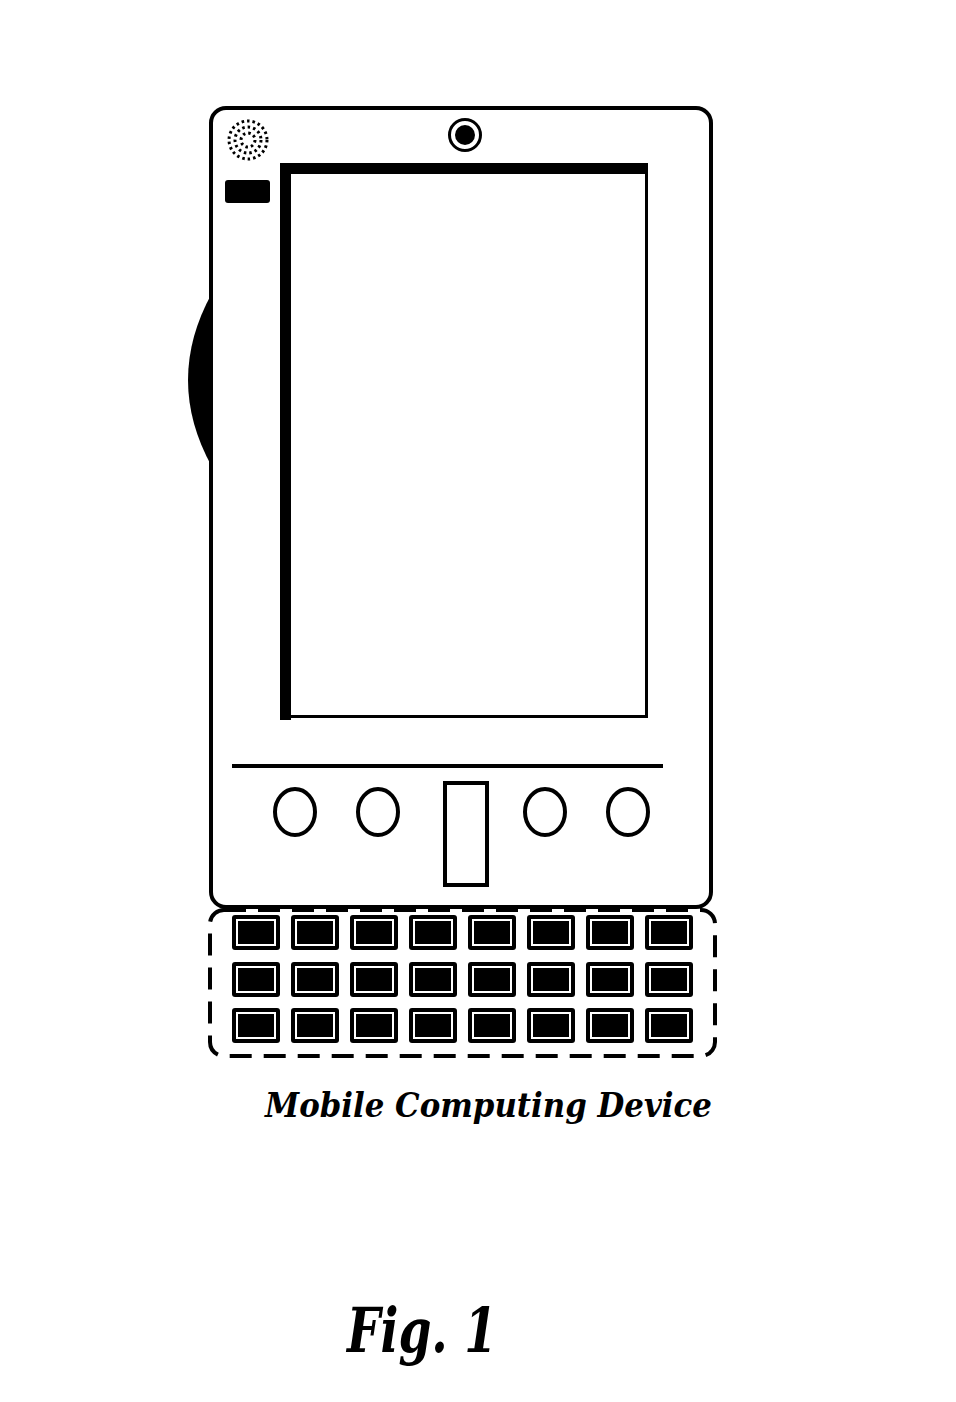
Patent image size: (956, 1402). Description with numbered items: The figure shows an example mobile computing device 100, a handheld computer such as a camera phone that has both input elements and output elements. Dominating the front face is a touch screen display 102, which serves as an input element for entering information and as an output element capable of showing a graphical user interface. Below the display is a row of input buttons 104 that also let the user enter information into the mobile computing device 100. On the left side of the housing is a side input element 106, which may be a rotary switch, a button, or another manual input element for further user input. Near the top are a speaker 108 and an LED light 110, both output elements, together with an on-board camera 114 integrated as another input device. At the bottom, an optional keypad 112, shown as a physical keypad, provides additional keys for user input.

The mobile computing device 100 is at (712, 128).
The touch screen display 102 is at (315, 639).
The input buttons 104 is at (633, 826).
The side input element 106 is at (190, 348).
The speaker 108 is at (228, 138).
The LED light 110 is at (225, 190).
The keypad 112 is at (210, 1015).
The on-board camera 114 is at (480, 124).